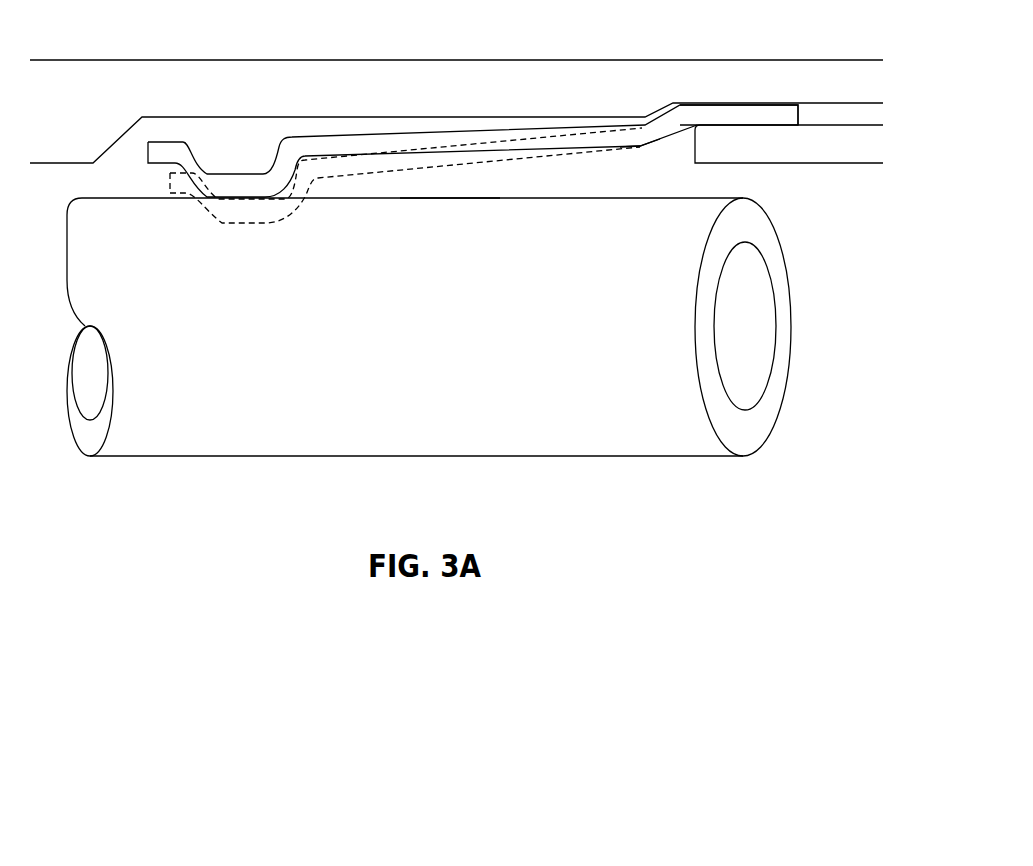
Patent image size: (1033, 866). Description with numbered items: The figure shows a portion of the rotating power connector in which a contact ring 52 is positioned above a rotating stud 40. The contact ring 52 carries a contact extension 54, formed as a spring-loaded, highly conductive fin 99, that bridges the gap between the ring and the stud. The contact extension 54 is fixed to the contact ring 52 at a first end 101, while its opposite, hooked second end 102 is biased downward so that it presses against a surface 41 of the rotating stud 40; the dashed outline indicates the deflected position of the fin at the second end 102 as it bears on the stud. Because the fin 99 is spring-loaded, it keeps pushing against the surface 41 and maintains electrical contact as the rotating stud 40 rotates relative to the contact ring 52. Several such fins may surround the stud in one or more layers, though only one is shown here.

The contact ring 52 is at (127, 60).
The spring-loaded, highly conductive fin 99 is at (275, 146).
The first end 101 is at (778, 103).
The contact extension 54 is at (637, 145).
The second end 102 is at (275, 222).
The rotating stud 40 is at (186, 457).
The surface 41 is at (443, 198).